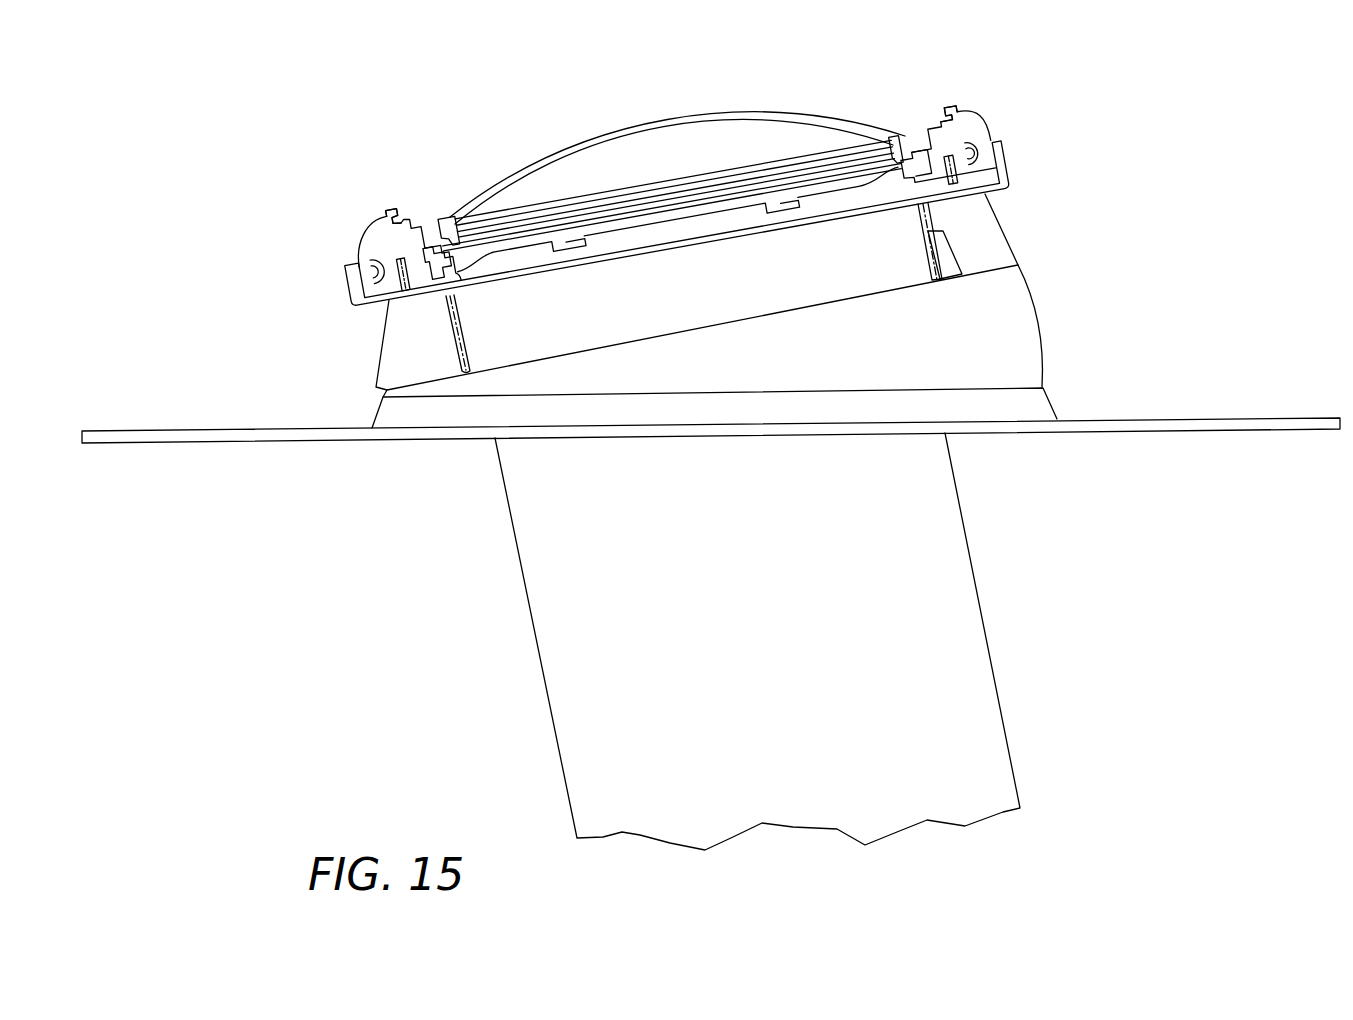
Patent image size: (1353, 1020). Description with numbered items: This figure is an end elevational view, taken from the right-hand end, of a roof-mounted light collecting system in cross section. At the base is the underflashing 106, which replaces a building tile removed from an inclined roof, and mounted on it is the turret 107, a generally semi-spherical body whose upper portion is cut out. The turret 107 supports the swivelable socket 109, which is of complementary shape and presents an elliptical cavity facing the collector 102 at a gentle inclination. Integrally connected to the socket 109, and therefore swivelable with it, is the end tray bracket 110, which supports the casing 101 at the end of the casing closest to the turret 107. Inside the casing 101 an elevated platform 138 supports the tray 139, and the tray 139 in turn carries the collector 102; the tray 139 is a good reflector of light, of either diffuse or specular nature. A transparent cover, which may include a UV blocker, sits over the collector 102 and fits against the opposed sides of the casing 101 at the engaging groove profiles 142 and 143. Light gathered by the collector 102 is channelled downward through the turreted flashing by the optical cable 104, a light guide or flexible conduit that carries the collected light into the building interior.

The casing 101 is at (972, 113).
The collector 102 is at (512, 215).
The optical cable 104 is at (965, 609).
The underflashing 106 is at (1236, 418).
The turret 107 is at (1040, 338).
The swivelable socket 109 is at (737, 110).
The end tray bracket 110 is at (1009, 175).
The elevated platform 138 is at (628, 223).
The tray 139 is at (530, 236).
The engaging groove profile 142 is at (931, 120).
The engaging groove profile 143 is at (382, 214).